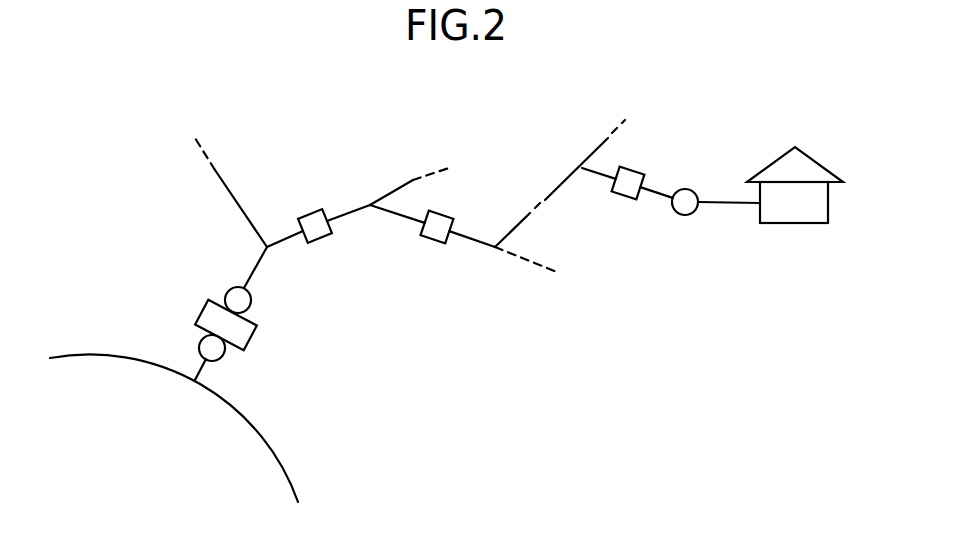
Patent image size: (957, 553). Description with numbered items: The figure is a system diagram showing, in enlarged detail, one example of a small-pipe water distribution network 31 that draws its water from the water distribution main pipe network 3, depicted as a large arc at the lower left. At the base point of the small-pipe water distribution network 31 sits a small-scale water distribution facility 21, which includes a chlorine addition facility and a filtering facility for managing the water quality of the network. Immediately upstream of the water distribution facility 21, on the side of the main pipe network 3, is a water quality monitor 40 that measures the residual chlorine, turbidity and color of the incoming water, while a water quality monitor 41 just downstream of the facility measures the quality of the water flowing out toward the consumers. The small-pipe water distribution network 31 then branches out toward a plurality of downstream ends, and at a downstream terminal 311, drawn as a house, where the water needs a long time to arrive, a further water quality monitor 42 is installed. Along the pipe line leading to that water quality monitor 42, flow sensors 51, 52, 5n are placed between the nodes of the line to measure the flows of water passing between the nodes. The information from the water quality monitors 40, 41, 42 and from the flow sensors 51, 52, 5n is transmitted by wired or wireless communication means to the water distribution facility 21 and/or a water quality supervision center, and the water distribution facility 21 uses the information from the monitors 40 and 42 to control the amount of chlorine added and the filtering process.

The water distribution main pipe network 3 is at (93, 357).
The small-scale water distribution facility 21 is at (197, 313).
The small-pipe water distribution network 31 is at (245, 261).
The water quality monitor 40 is at (225, 358).
The water quality monitor 41 is at (253, 303).
The water quality monitor 42 is at (685, 188).
The flow sensor 51 is at (305, 212).
The flow sensor 52 is at (430, 240).
The flow sensor 5n is at (622, 198).
The downstream terminal 311 is at (797, 223).